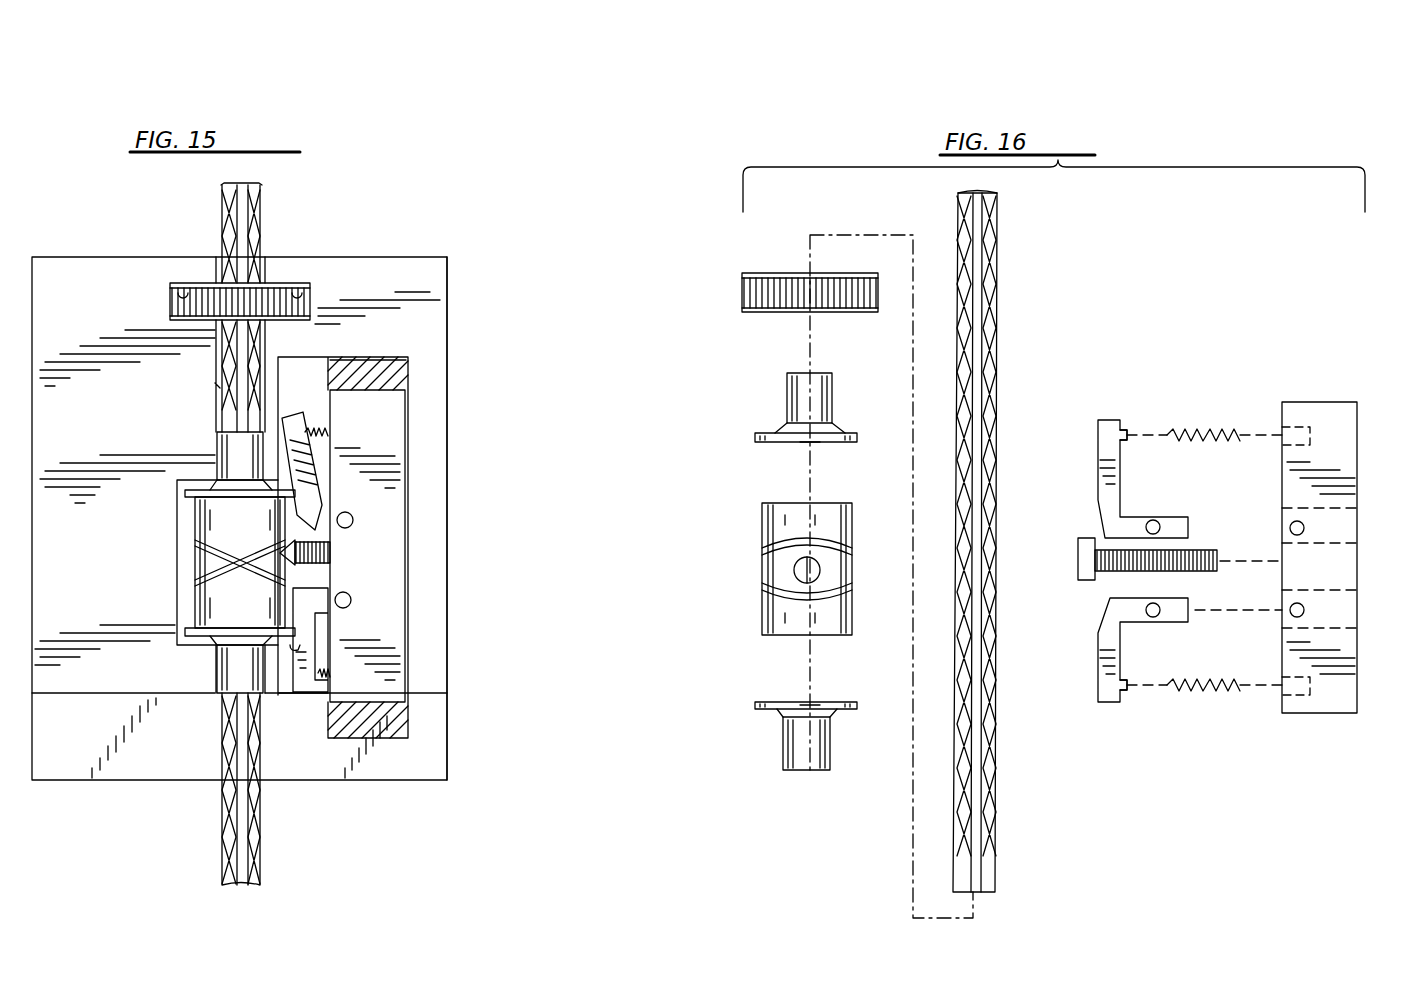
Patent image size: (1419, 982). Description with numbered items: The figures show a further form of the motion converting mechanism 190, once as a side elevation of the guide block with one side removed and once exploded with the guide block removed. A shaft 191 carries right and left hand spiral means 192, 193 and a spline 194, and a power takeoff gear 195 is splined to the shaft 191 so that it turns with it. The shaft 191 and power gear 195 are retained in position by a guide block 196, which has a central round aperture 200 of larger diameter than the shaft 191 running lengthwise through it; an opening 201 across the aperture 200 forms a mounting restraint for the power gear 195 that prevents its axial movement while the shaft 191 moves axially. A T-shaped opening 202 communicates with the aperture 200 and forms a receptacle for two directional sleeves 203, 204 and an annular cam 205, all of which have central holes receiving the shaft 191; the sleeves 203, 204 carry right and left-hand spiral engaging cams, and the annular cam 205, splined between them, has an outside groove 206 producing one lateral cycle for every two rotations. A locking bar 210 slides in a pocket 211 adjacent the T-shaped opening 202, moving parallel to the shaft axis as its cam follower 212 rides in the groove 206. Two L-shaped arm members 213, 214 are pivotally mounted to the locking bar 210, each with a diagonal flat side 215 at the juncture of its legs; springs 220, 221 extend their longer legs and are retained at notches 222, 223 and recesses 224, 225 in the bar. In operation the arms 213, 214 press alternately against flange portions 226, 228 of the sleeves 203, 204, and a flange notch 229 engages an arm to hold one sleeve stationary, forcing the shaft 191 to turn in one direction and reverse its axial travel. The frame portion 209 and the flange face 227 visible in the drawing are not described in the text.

In FIG. 15, the mechanism 190 is at (426, 243).
In FIG. 15, the shaft 191 is at (242, 186).
In FIG. 16, the shaft 191 is at (1003, 385).
In FIG. 15, the right hand spiral means 192 is at (222, 236).
In FIG. 16, the right hand spiral means 192 is at (958, 262).
In FIG. 15, the left hand spiral means 193 is at (259, 250).
In FIG. 16, the left hand spiral means 193 is at (997, 262).
In FIG. 16, the spline 194 is at (978, 194).
In FIG. 15, the power takeoff gear 195 is at (295, 308).
In FIG. 16, the power takeoff gear 195 is at (780, 290).
In FIG. 15, the guide block 196 is at (80, 240).
In FIG. 15, the central round aperture 200 is at (218, 387).
In FIG. 15, the opening 201 is at (178, 292).
In FIG. 15, the T-shaped opening 202 is at (185, 543).
In FIG. 15, the directional sleeve 203 is at (222, 452).
In FIG. 16, the directional sleeve 203 is at (808, 402).
In FIG. 15, the directional sleeve 204 is at (243, 670).
In FIG. 16, the directional sleeve 204 is at (786, 728).
In FIG. 15, the annular cam 205 is at (212, 525).
In FIG. 16, the annular cam 205 is at (770, 530).
In FIG. 15, the groove 206 is at (198, 578).
In FIG. 16, the groove 206 is at (762, 590).
In FIG. 15, the frame 209 is at (398, 396).
In FIG. 15, the locking bar 210 is at (392, 575).
In FIG. 16, the locking bar 210 is at (1340, 478).
In FIG. 15, the pocket 211 is at (395, 380).
In FIG. 15, the cam follower 212 is at (305, 552).
In FIG. 16, the cam follower 212 is at (1085, 562).
In FIG. 16, the L-shaped arm member 213 is at (1098, 470).
In FIG. 16, the L-shaped arm member 214 is at (1100, 672).
In FIG. 16, the diagonal flat side 215 is at (1100, 522).
In FIG. 16, the spring 220 is at (1202, 688).
In FIG. 16, the spring 221 is at (1204, 420).
In FIG. 16, the notch 222 is at (1127, 686).
In FIG. 16, the notch 223 is at (1127, 435).
In FIG. 16, the recess 224 is at (1300, 690).
In FIG. 16, the recess 225 is at (1300, 430).
In FIG. 16, the flange portion 226 is at (852, 434).
In FIG. 15, the flange face 227 is at (233, 492).
In FIG. 16, the flange face 227 is at (817, 443).
In FIG. 15, the flange portion 228 is at (300, 648).
In FIG. 16, the flange portion 228 is at (850, 704).
In FIG. 16, the notch 229 is at (812, 705).